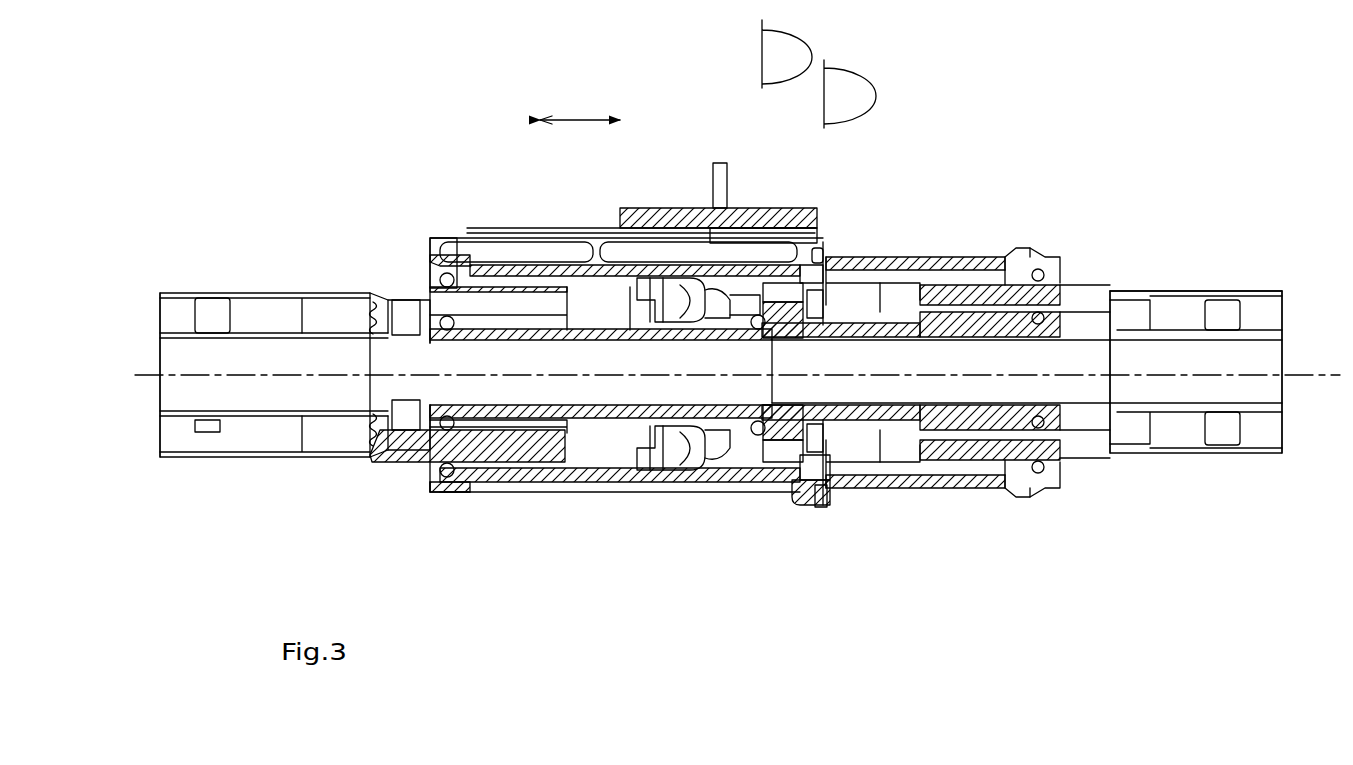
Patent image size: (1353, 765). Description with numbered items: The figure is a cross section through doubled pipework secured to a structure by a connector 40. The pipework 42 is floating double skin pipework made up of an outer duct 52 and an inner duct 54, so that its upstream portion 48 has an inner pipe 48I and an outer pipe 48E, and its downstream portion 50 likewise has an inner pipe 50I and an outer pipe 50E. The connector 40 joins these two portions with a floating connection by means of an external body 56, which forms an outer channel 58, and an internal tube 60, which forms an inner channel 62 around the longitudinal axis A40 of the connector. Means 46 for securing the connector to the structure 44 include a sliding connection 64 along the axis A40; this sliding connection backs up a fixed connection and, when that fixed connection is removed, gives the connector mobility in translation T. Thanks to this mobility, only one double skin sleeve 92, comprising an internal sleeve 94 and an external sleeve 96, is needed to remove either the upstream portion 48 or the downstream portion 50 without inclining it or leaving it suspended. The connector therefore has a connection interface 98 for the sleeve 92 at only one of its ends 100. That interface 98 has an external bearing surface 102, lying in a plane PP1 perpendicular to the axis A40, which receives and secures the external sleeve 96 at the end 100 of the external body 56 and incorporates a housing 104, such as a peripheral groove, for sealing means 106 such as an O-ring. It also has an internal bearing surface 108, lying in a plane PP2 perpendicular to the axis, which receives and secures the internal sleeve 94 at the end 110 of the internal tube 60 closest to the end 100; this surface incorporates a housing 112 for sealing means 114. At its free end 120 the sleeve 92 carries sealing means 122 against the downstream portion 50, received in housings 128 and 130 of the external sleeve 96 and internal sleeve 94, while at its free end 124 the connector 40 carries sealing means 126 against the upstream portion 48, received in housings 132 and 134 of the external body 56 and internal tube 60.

The connector 40 is at (558, 492).
The pipework 42 is at (1240, 290).
The structure 44 is at (735, 168).
The means for securing 46 is at (548, 222).
The upstream portion 48 is at (245, 460).
The outer pipe 48E is at (306, 292).
The inner pipe 48I is at (255, 418).
The downstream portion 50 is at (1183, 460).
The inner pipe 50I is at (1165, 320).
The outer pipe 50E is at (1232, 453).
The outer duct 52 is at (260, 292).
The inner duct 54 is at (190, 400).
The external body 56 is at (577, 484).
The outer channel 58 is at (597, 457).
The internal tube 60 is at (560, 483).
The inner channel 62 is at (607, 392).
The sliding connection 64 is at (455, 232).
The double skin sleeve 92 is at (953, 256).
The internal sleeve 94 is at (883, 328).
The external sleeve 96 is at (923, 490).
The connection interface 98 is at (750, 462).
The end 100 is at (795, 510).
The external bearing surface 102 is at (830, 257).
The housing 104 is at (812, 508).
The sealing means 106 is at (812, 290).
The internal bearing surface 108 is at (800, 292).
The end 110 is at (728, 430).
The housing 112 is at (740, 318).
The sealing means 114 is at (812, 425).
The free end 120 is at (1038, 493).
The sealing means 122 is at (1040, 262).
The free end 124 is at (455, 503).
The sealing means 126 is at (440, 268).
The housing 128 is at (1047, 275).
The housing 130 is at (1045, 320).
The housing 132 is at (445, 493).
The housing 134 is at (435, 437).
The longitudinal axis A40 is at (1298, 376).
The plane PP1 is at (850, 94).
The plane PP2 is at (787, 54).
The translation T is at (580, 107).